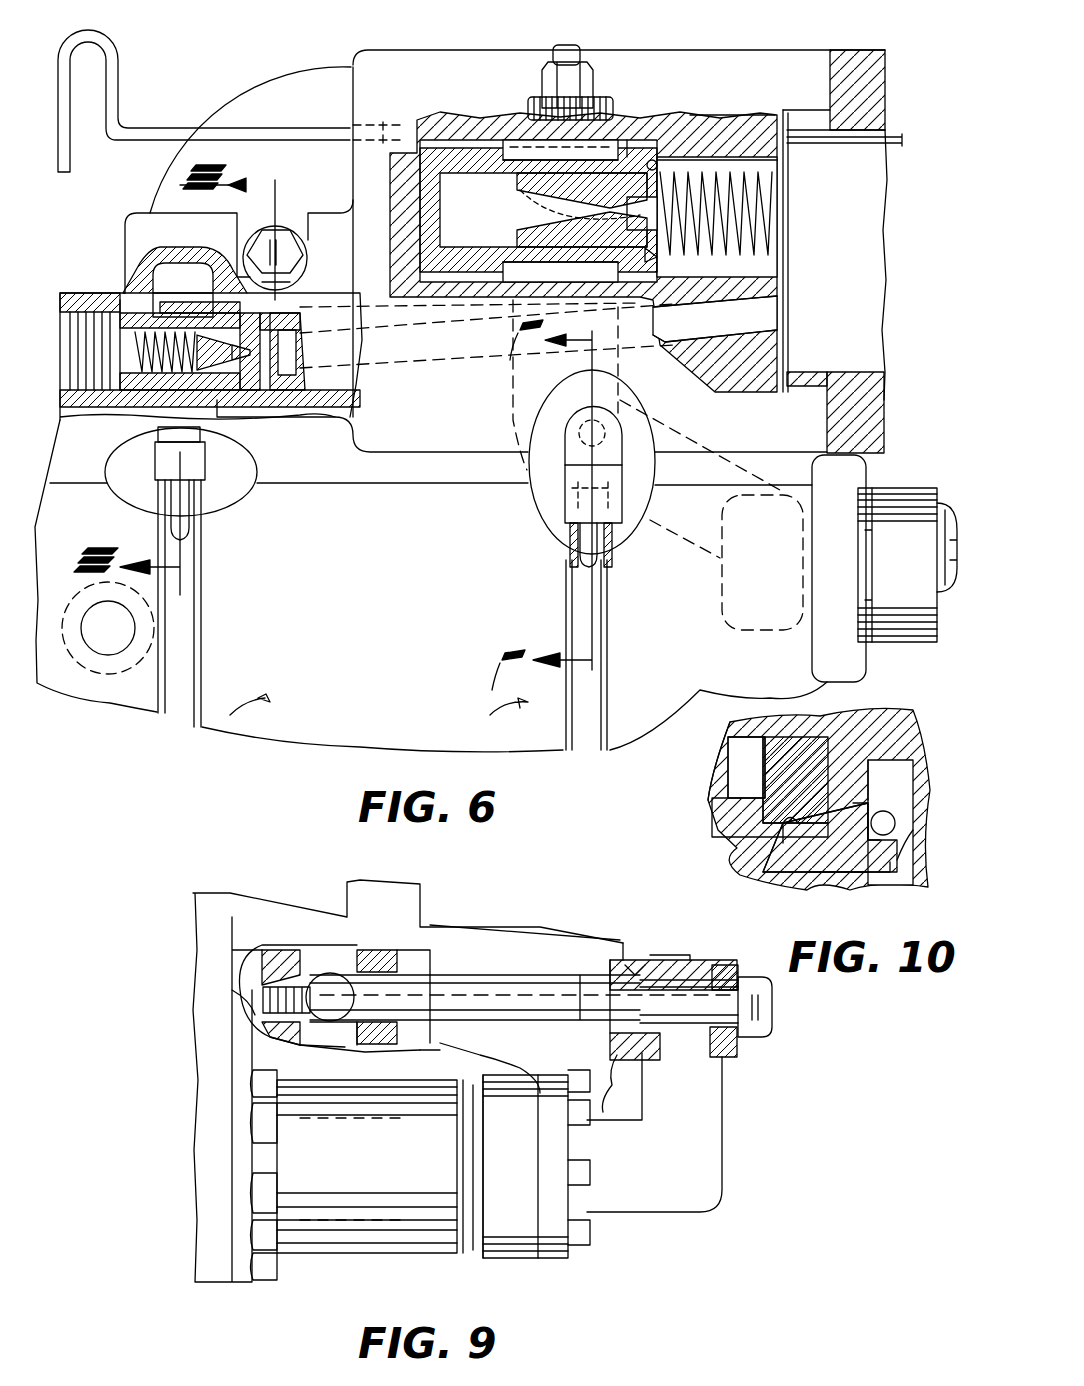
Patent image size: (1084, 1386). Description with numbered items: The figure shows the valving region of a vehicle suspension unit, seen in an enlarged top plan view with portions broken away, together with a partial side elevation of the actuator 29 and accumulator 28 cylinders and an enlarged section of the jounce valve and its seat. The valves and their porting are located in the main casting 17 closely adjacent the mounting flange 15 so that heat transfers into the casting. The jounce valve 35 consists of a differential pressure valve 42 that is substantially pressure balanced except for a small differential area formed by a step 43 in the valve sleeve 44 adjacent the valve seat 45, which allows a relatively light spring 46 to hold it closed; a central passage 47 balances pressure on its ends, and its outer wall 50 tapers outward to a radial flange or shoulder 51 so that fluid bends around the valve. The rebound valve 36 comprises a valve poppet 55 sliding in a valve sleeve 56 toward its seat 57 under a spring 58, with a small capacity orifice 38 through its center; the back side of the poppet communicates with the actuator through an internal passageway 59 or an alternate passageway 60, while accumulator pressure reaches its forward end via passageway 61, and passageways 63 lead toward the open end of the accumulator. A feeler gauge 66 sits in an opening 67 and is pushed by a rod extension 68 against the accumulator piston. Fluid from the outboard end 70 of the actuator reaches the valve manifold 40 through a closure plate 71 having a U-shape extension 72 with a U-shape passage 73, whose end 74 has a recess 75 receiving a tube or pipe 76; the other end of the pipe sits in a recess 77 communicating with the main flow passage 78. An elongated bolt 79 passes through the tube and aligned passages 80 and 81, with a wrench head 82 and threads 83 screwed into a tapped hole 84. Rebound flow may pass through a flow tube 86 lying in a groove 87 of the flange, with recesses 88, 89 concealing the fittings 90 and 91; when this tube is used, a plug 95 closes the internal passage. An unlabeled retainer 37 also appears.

In FIG. 6, the mounting flange 15 is at (275, 715).
In FIG. 6, the main casting 17 is at (135, 225).
In FIG. 9, the main casting 17 is at (200, 1170).
In FIG. 9, the accumulator 28 is at (525, 928).
In FIG. 9, the actuator 29 is at (395, 1258).
In FIG. 6, the jounce valve 35 is at (495, 132).
In FIG. 10, the jounce valve 35 is at (710, 855).
In FIG. 6, the rebound valve 36 is at (262, 380).
In FIG. 6, the retainer 37 is at (218, 318).
In FIG. 6, the small capacity orifice 38 is at (241, 351).
In FIG. 6, the valve manifold 40 is at (345, 45).
In FIG. 6, the differential pressure valve 42 is at (522, 232).
In FIG. 10, the differential pressure valve 42 is at (795, 865).
In FIG. 6, the step 43 is at (620, 157).
In FIG. 10, the step 43 is at (814, 780).
In FIG. 10, the valve sleeve 44 is at (730, 780).
In FIG. 6, the valve seat 45 is at (659, 262).
In FIG. 10, the valve seat 45 is at (838, 812).
In FIG. 6, the spring 46 is at (773, 198).
In FIG. 10, the spring 46 is at (925, 860).
In FIG. 6, the central passage 47 is at (590, 222).
In FIG. 6, the outer wall 50 is at (615, 182).
In FIG. 10, the outer wall 50 is at (780, 850).
In FIG. 6, the radial flange or shoulder 51 is at (650, 160).
In FIG. 10, the radial flange or shoulder 51 is at (883, 810).
In FIG. 6, the valve poppet 55 is at (196, 392).
In FIG. 6, the valve sleeve 56 is at (125, 400).
In FIG. 6, the seat 57 is at (262, 325).
In FIG. 6, the spring 58 is at (125, 318).
In FIG. 6, the internal passageway 59 is at (212, 275).
In FIG. 6, the alternate passageway 60 is at (198, 528).
In FIG. 6, the passageway 61 is at (770, 327).
In FIG. 6, the fluid passageway 63 is at (720, 160).
In FIG. 6, the feeler gauge 66 is at (818, 145).
In FIG. 6, the opening 67 is at (690, 118).
In FIG. 6, the rod extension 68 is at (186, 135).
In FIG. 9, the outboard end 70 is at (530, 1260).
In FIG. 9, the closure plate 71 is at (582, 1235).
In FIG. 9, the U-shape extension 72 is at (712, 1158).
In FIG. 9, the U-shape passage 73 is at (725, 1055).
In FIG. 9, the end of the extension 74 is at (628, 962).
In FIG. 9, the recess 75 is at (633, 963).
In FIG. 6, the tube or pipe 76 is at (912, 492).
In FIG. 9, the tube or pipe 76 is at (488, 1045).
In FIG. 9, the recess 77 is at (372, 1050).
In FIG. 6, the main flow passage 78 is at (508, 405).
In FIG. 9, the main flow passage 78 is at (330, 1025).
In FIG. 6, the elongated bolt 79 is at (935, 560).
In FIG. 9, the elongated bolt 79 is at (672, 1010).
In FIG. 9, the passage 80 is at (722, 965).
In FIG. 9, the passage 81 is at (372, 952).
In FIG. 9, the wrench head 82 is at (772, 1012).
In FIG. 9, the threads 83 is at (292, 985).
In FIG. 9, the tapped hole 84 is at (255, 965).
In FIG. 6, the flow tube 86 is at (565, 608).
In FIG. 6, the groove 87 is at (203, 648).
In FIG. 6, the recess 88 is at (132, 508).
In FIG. 6, the recess 89 is at (550, 510).
In FIG. 6, the fitting 90 is at (152, 455).
In FIG. 6, the fitting 91 is at (565, 483).
In FIG. 6, the plug 95 is at (285, 240).